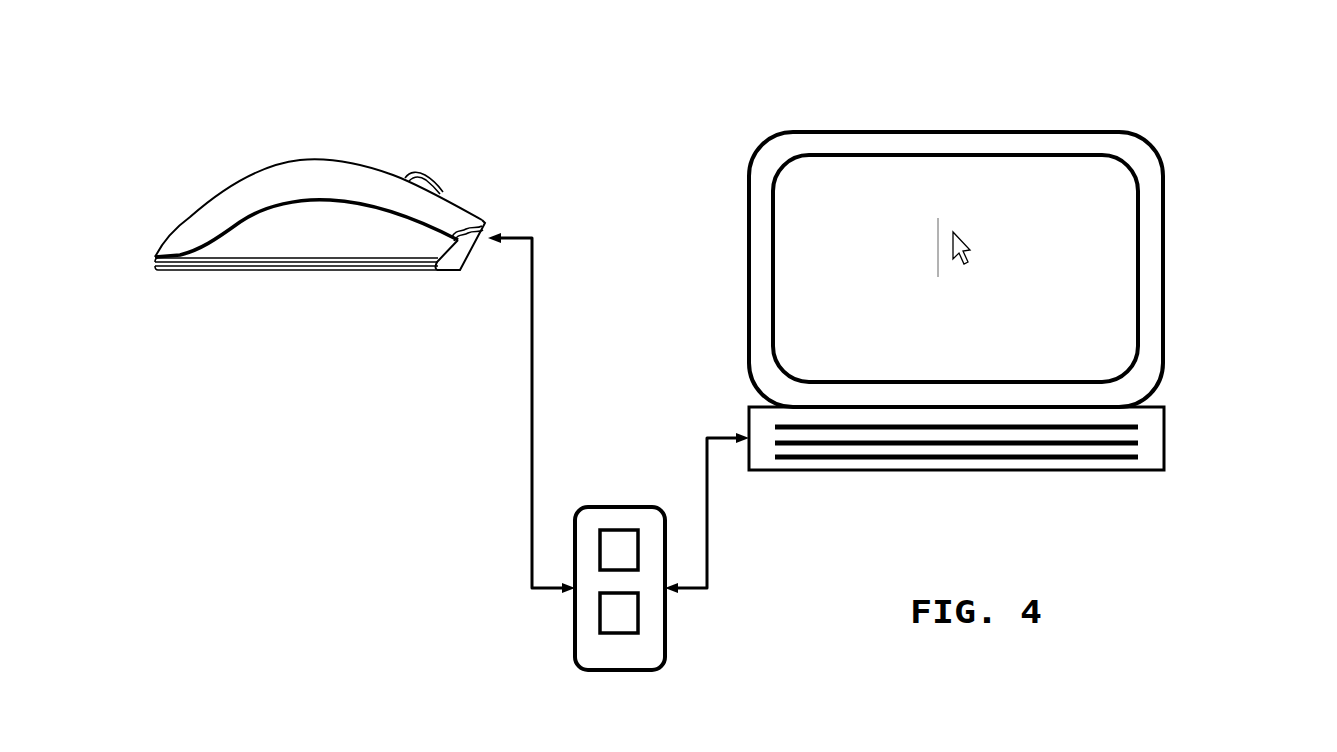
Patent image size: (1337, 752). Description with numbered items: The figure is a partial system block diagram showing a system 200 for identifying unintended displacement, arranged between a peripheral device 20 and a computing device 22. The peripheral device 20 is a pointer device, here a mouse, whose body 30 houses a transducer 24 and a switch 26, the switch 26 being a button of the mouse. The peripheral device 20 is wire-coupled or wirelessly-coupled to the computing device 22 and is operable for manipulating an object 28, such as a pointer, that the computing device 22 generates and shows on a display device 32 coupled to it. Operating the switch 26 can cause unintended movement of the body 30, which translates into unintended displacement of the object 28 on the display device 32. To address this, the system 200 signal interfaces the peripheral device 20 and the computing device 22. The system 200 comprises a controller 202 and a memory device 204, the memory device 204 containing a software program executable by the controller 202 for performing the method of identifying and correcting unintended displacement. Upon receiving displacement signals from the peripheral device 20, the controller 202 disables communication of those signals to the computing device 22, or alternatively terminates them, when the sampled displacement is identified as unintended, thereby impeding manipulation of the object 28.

The peripheral device 20 is at (364, 252).
The computing device 22 is at (1032, 252).
The transducer 24 is at (388, 283).
The switch 26 is at (437, 220).
The object 28 is at (969, 215).
The body 30 is at (250, 207).
The display device 32 is at (1133, 170).
The system 200 is at (540, 581).
The controller 202 is at (623, 530).
The memory device 204 is at (627, 633).